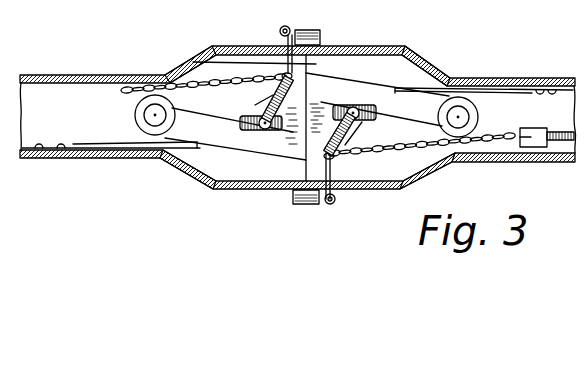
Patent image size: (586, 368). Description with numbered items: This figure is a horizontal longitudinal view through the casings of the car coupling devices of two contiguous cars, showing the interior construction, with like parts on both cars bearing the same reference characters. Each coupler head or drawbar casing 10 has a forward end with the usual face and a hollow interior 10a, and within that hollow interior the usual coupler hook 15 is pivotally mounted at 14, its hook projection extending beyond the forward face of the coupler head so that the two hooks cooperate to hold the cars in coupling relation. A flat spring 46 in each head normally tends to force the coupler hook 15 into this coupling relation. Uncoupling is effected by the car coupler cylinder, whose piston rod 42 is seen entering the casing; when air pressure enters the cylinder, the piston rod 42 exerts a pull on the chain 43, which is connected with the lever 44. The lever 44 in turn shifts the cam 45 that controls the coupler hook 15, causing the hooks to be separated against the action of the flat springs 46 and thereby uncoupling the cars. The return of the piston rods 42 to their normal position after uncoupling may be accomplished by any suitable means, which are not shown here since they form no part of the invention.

The coupler head casing 10 is at (259, 46).
The hollow interior of coupler head 10a is at (214, 44).
The pivot of coupler hook 14 is at (143, 114).
The coupler hook 15 is at (307, 116).
The piston rod 42 is at (551, 150).
The chain 43 is at (195, 80).
The lever 44 is at (306, 64).
The cam 45 is at (250, 115).
The flat spring 46 is at (130, 143).